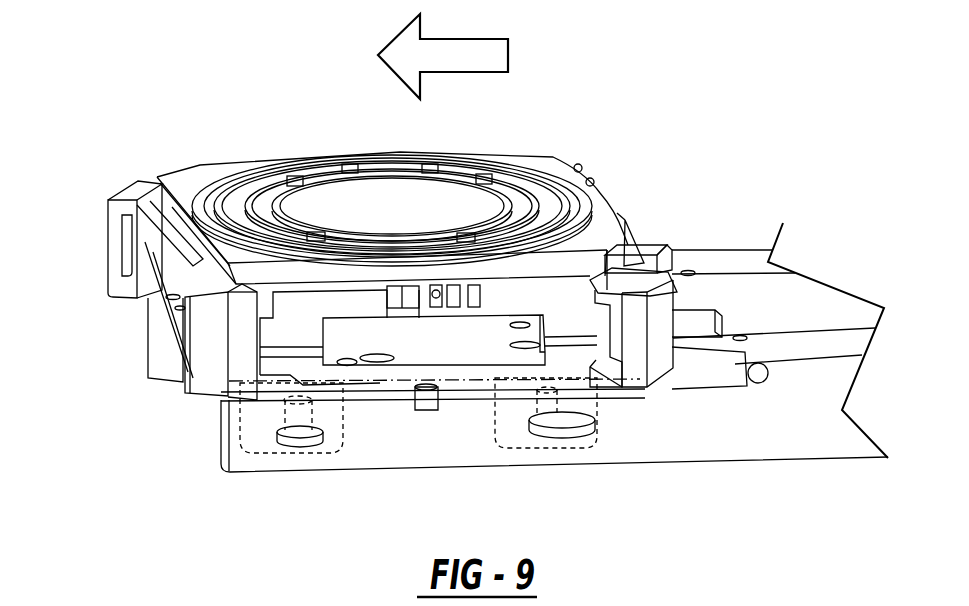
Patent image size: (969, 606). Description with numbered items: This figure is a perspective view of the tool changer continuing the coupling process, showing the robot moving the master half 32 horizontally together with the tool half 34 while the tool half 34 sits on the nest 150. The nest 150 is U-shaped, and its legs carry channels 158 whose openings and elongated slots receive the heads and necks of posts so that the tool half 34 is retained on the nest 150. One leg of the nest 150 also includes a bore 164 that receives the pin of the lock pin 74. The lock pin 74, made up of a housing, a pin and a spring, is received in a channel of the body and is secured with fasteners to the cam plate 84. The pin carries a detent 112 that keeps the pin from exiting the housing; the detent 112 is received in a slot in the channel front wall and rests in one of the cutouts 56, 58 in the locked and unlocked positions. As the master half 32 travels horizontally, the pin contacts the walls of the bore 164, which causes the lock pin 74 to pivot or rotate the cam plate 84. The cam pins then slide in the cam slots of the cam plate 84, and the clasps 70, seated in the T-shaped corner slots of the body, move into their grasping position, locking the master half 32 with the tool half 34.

The master half 32 is at (170, 150).
The tool half 34 is at (128, 363).
The cutout 56 is at (398, 308).
The cutout 58 is at (465, 297).
The clasp 70 is at (88, 244).
The lock pin 74 is at (437, 335).
The cam plate 84 is at (603, 228).
The detent 112 is at (403, 287).
The nest 150 is at (732, 462).
The channel 158 is at (292, 457).
The bore 164 is at (428, 403).